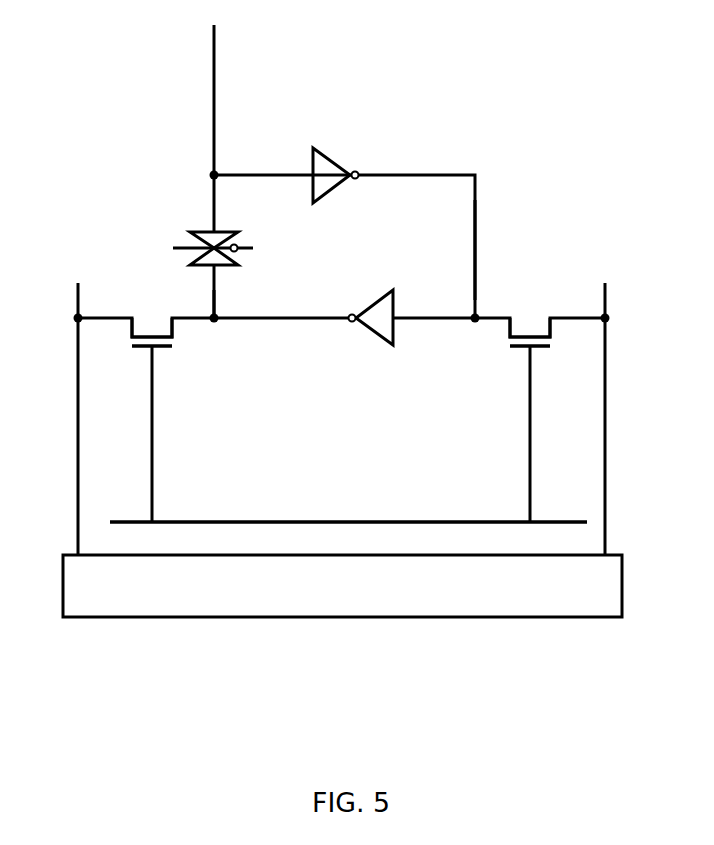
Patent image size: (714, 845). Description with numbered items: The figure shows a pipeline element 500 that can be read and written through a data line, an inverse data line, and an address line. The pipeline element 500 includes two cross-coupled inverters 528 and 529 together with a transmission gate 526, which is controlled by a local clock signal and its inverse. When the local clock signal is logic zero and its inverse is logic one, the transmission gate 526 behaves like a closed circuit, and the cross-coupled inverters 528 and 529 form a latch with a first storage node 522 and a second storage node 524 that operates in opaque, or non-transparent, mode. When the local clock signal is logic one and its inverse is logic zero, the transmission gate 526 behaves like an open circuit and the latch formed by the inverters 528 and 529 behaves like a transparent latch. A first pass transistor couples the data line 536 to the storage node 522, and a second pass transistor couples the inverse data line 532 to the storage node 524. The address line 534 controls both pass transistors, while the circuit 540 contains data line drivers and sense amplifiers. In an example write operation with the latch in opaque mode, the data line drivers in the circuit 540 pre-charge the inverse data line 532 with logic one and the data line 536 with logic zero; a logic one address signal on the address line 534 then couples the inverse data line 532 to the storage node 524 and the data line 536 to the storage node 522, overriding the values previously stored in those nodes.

The pipeline element 500 is at (171, 74).
The first storage node 522 is at (216, 286).
The second storage node 524 is at (473, 250).
The transmission gate 526 is at (197, 230).
The inverter 528 is at (312, 164).
The inverter 529 is at (385, 338).
The inverse data line 532 is at (603, 295).
The address line 534 is at (578, 518).
The data line 536 is at (80, 289).
The circuit 540 is at (365, 598).